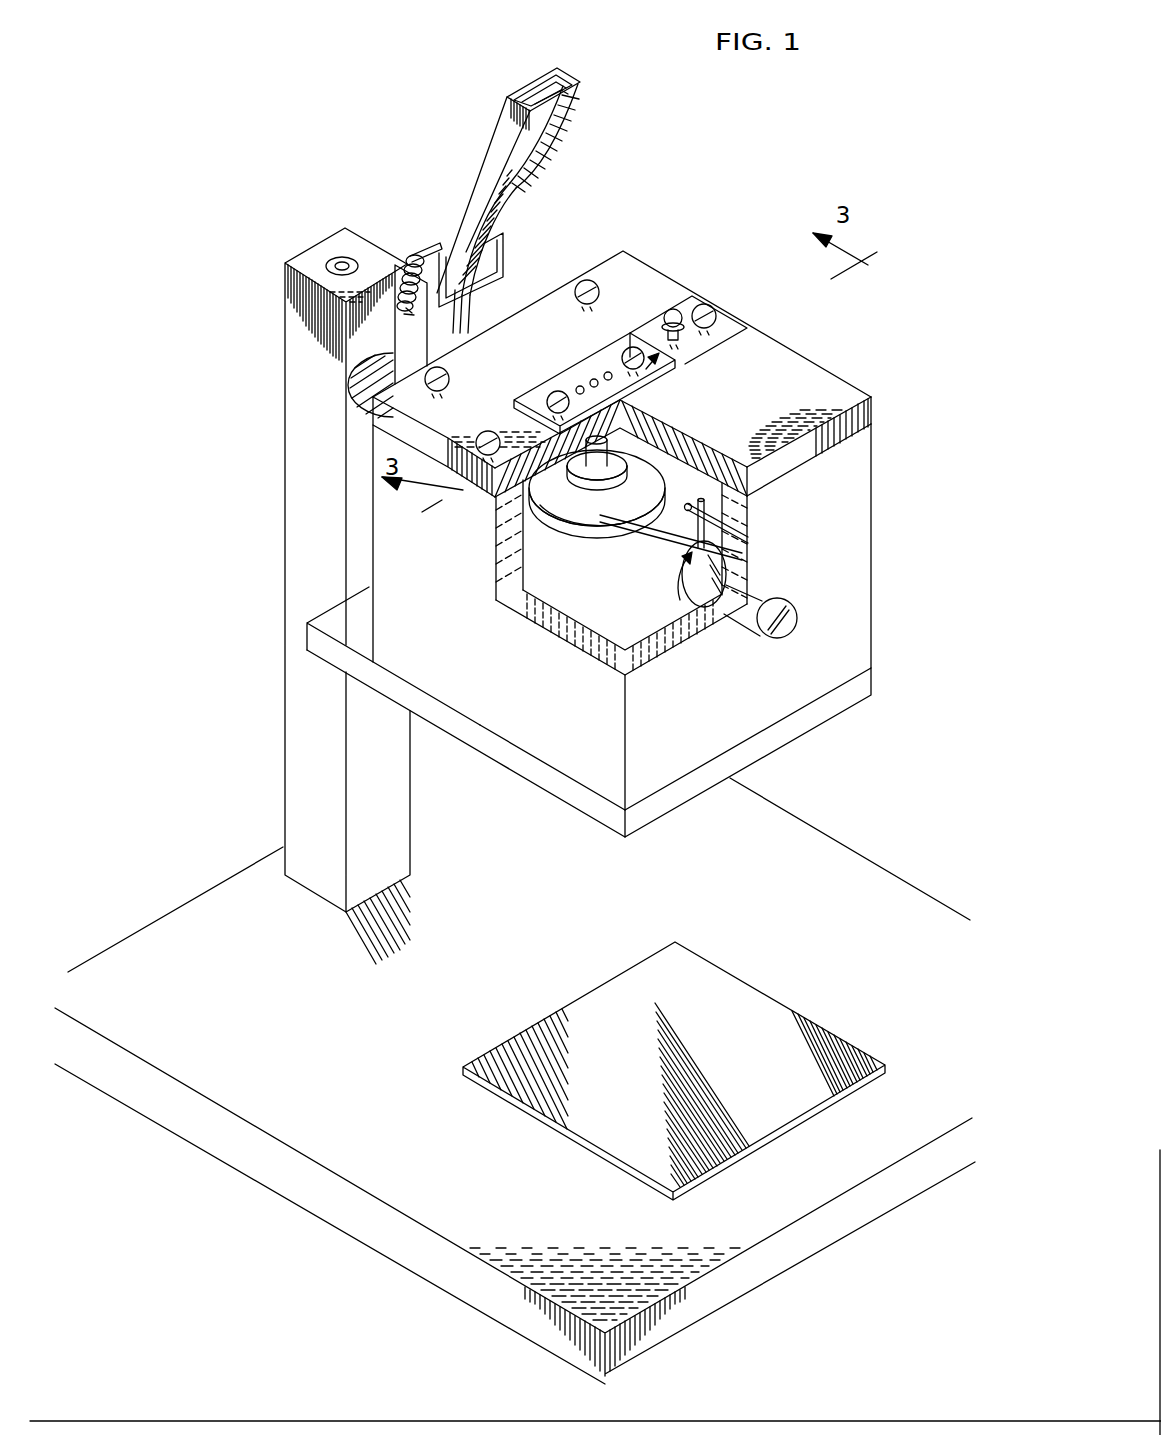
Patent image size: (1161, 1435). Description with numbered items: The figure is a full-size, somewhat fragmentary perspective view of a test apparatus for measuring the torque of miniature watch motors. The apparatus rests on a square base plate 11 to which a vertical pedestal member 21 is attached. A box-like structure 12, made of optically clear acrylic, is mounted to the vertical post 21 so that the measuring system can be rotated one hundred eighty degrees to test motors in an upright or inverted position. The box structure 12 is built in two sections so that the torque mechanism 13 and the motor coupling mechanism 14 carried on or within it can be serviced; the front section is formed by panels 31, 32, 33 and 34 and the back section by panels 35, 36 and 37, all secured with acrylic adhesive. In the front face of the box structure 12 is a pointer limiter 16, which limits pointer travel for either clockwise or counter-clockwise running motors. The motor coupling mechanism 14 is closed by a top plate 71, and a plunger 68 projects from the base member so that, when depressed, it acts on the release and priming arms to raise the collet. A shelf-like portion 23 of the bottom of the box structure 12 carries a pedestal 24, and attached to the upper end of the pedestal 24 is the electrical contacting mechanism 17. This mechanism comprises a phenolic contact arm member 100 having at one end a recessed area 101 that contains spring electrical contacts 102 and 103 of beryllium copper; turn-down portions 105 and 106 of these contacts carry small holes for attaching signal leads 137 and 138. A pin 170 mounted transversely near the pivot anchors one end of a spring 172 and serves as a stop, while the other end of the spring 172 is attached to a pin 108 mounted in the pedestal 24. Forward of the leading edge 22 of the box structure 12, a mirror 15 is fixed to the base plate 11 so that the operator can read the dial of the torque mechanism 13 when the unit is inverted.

The base plate 11 is at (187, 900).
The box-like structure 12 is at (764, 322).
The torque mechanism 13 is at (592, 496).
The motor coupling mechanism 14 is at (660, 362).
The mirror 15 is at (742, 968).
The pointer limiter 16 is at (682, 582).
The electrical contacting mechanism 17 is at (556, 58).
The vertical pedestal member 21 is at (283, 705).
The leading edge 22 is at (804, 734).
The shelf-like portion 23 is at (337, 620).
The pedestal 24 is at (506, 283).
The panel 31 is at (862, 528).
The panel 32 is at (645, 546).
The panel 33 is at (522, 743).
The panel 34 is at (793, 362).
The panel 35 is at (545, 792).
The panel 36 is at (538, 563).
The panel 37 is at (642, 270).
The plunger 68 is at (677, 312).
The top plate 71 is at (592, 356).
The contact arm member 100 is at (488, 128).
The recessed area 101 is at (577, 78).
The electrical contact 102 is at (584, 90).
The electrical contact 103 is at (575, 108).
The turn-down portion 105 is at (528, 180).
The turn-down portion 106 is at (516, 190).
The pin 108 is at (397, 318).
The signal lead 137 is at (471, 316).
The signal lead 138 is at (462, 333).
The pin 170 is at (420, 256).
The spring 172 is at (405, 262).